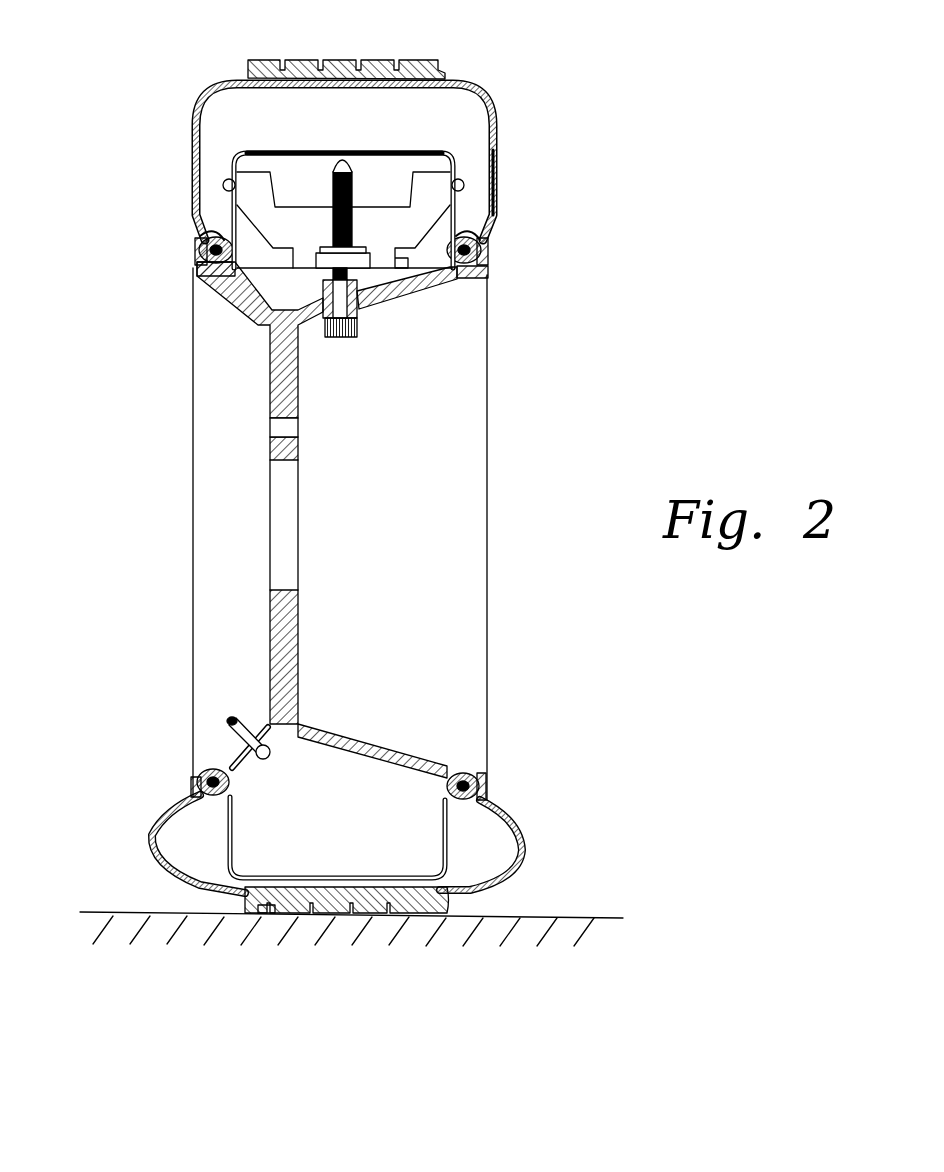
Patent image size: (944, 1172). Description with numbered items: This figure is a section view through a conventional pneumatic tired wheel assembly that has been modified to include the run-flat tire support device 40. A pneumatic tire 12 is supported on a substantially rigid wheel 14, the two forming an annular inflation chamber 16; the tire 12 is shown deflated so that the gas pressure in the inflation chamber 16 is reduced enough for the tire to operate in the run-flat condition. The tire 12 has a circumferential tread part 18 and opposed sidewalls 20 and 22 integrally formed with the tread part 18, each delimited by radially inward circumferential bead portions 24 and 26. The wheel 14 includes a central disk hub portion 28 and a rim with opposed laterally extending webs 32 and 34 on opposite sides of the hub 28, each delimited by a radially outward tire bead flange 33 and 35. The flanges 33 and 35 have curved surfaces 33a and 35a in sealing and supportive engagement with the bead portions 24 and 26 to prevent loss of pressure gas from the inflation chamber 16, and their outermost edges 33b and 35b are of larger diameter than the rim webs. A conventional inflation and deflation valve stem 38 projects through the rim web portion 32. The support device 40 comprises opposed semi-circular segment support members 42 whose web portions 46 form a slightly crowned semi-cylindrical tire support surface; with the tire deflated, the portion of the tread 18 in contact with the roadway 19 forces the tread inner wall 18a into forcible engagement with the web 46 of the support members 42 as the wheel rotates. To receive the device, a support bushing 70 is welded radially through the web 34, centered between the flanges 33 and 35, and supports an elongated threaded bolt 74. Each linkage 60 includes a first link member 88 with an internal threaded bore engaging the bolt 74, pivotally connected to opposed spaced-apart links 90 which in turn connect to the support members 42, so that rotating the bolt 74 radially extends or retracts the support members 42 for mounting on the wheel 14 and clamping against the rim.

The pneumatic tire 12 is at (494, 150).
The wheel 14 is at (302, 370).
The inflation chamber 16 is at (354, 125).
The tread part 18 is at (305, 60).
The tread inner wall 18a is at (447, 915).
The roadway 19 is at (572, 915).
The sidewall 20 is at (192, 142).
The sidewall 22 is at (488, 200).
The bead portion 24 is at (200, 268).
The bead portion 26 is at (490, 273).
The disk hub portion 28 is at (300, 425).
The rim web 32 is at (236, 292).
The tire bead flange 33 is at (193, 244).
The curved surface 33a is at (190, 179).
The outermost edge 33b is at (197, 237).
The rim web 34 is at (380, 297).
The tire bead flange 35 is at (488, 253).
The curved surface 35a is at (468, 238).
The outermost edge 35b is at (481, 245).
The valve stem 38 is at (230, 738).
The tire support device 40 is at (445, 843).
The segment support member 42 is at (230, 833).
The web portion 46 is at (262, 915).
The linkage 60 is at (413, 170).
The support bushing 70 is at (327, 287).
The threaded bolt 74 is at (355, 336).
The first link member 88 is at (375, 238).
The link 90 is at (252, 183).